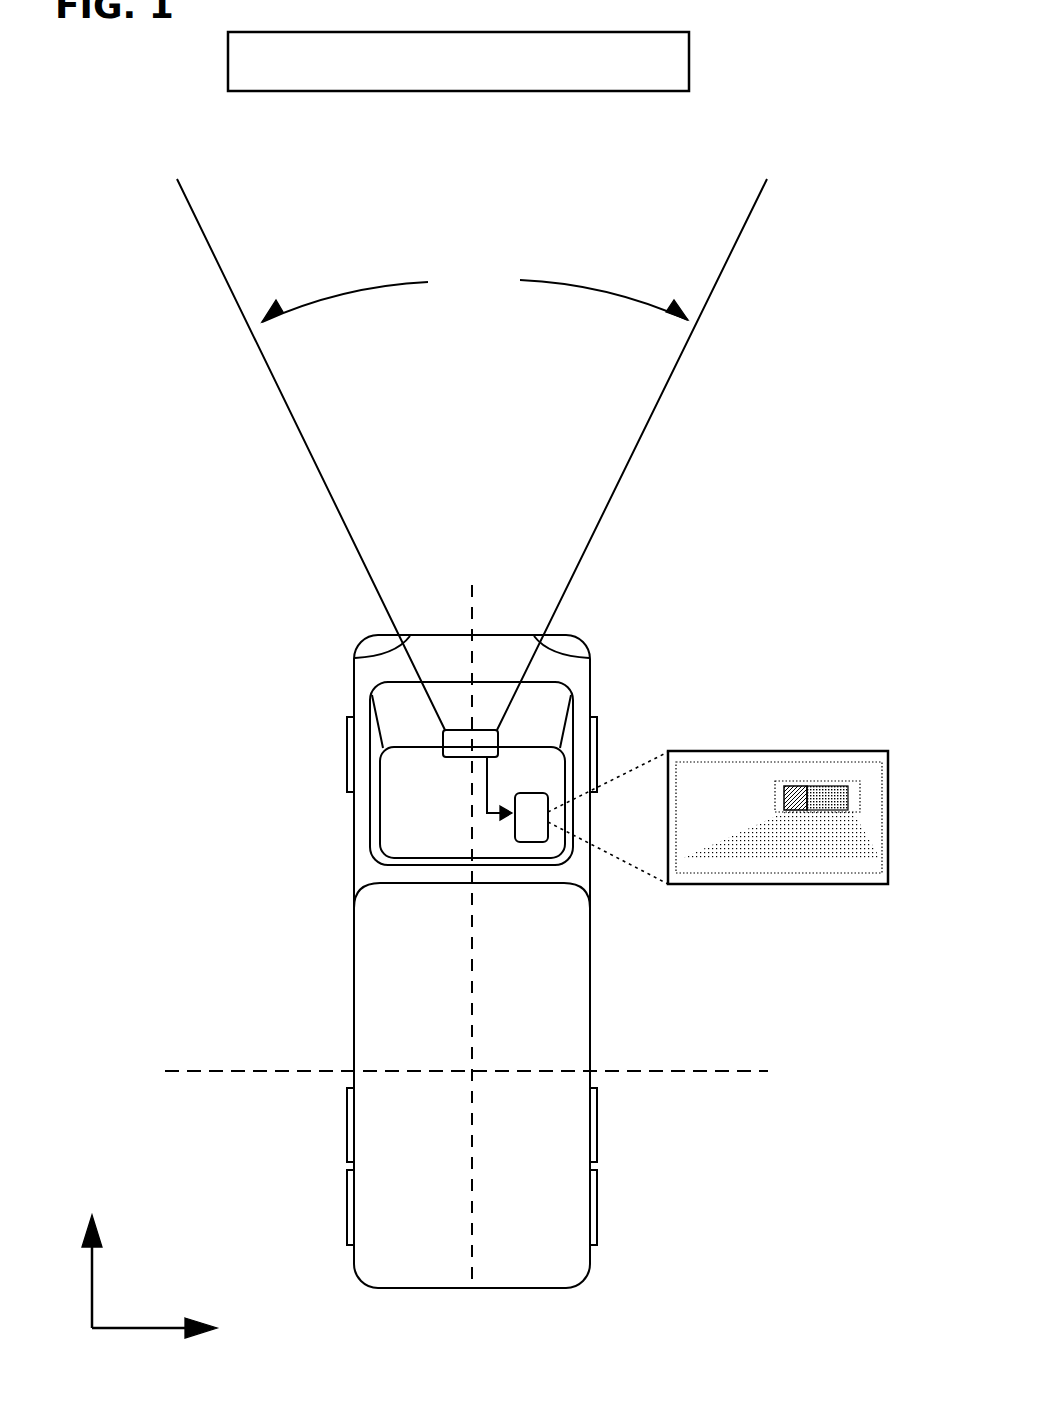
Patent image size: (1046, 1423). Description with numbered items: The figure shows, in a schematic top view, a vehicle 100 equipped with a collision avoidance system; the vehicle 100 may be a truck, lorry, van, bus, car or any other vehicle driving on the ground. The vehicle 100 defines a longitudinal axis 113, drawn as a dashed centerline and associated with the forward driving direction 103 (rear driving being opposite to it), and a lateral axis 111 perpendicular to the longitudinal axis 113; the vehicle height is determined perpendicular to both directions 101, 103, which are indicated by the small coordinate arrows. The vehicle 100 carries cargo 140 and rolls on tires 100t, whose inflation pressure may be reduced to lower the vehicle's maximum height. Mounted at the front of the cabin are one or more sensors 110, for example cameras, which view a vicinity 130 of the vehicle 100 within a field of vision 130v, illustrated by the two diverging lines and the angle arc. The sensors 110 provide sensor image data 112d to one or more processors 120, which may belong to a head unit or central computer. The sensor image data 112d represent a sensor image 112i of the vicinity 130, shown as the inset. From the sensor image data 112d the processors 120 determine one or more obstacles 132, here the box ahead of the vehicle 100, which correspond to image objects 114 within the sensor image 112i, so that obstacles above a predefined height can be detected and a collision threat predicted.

The vehicle 100 is at (581, 624).
The tires 100t is at (352, 1245).
The direction 101 is at (154, 1339).
The direction 103 is at (70, 1271).
The sensors 110 is at (487, 735).
The lateral axis 111 is at (222, 1071).
The sensor image data 112d is at (487, 802).
The sensor image 112i is at (764, 752).
The longitudinal axis 113 is at (470, 983).
The image objects 114 is at (778, 793).
The processors 120 is at (536, 797).
The vicinity 130 is at (452, 455).
The field of vision 130v is at (475, 293).
The obstacles 132 is at (458, 61).
The cargo 140 is at (372, 1055).